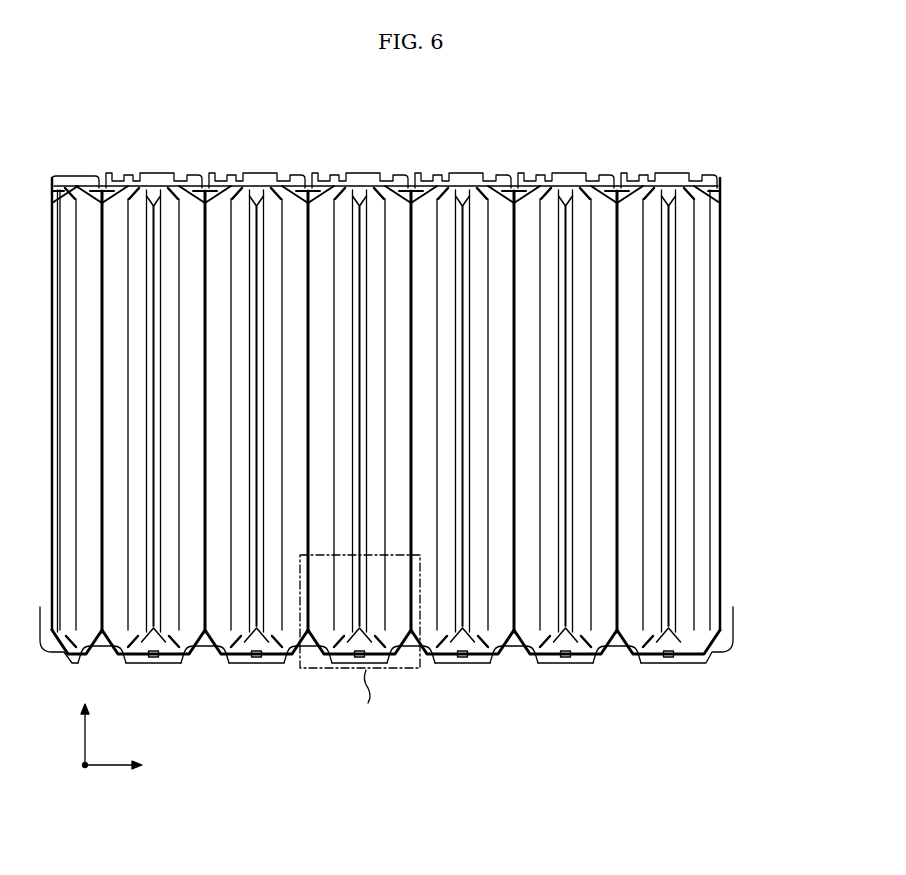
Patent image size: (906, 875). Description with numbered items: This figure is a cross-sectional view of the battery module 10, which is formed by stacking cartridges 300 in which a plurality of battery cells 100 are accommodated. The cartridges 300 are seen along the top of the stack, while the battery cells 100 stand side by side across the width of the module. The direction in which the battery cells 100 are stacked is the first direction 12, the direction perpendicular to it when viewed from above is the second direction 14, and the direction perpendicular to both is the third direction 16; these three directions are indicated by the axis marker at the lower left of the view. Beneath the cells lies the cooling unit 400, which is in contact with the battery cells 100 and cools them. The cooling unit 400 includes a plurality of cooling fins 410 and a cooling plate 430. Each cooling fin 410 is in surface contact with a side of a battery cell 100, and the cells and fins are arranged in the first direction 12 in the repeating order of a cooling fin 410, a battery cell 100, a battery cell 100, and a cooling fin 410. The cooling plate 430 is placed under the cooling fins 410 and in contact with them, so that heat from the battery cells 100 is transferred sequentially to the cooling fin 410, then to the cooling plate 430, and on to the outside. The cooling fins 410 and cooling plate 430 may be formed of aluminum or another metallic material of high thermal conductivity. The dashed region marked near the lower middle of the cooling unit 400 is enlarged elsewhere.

The battery module 10 is at (163, 113).
The battery cell 100 is at (708, 240).
The cartridge 300 is at (698, 175).
The cooling unit 400 is at (562, 727).
The cooling fin 410 is at (508, 648).
The cooling plate 430 is at (496, 664).
The first direction 12 is at (129, 764).
The second direction 14 is at (85, 765).
The third direction 16 is at (87, 722).